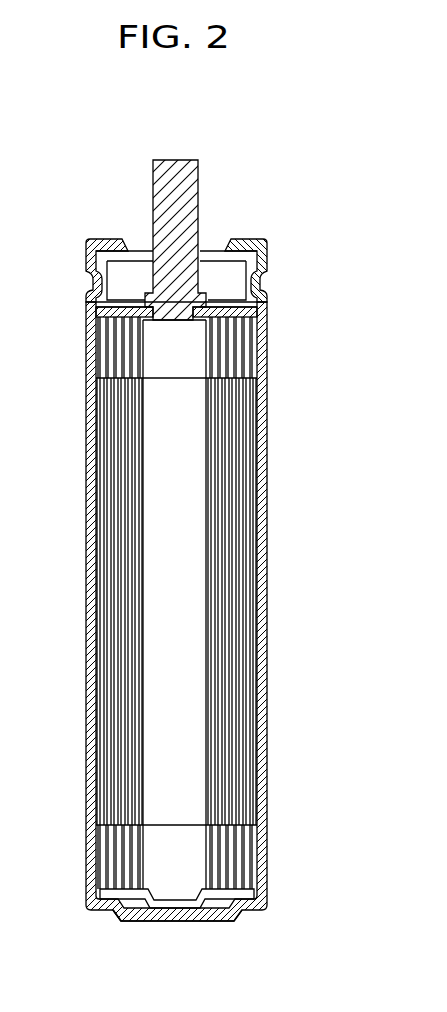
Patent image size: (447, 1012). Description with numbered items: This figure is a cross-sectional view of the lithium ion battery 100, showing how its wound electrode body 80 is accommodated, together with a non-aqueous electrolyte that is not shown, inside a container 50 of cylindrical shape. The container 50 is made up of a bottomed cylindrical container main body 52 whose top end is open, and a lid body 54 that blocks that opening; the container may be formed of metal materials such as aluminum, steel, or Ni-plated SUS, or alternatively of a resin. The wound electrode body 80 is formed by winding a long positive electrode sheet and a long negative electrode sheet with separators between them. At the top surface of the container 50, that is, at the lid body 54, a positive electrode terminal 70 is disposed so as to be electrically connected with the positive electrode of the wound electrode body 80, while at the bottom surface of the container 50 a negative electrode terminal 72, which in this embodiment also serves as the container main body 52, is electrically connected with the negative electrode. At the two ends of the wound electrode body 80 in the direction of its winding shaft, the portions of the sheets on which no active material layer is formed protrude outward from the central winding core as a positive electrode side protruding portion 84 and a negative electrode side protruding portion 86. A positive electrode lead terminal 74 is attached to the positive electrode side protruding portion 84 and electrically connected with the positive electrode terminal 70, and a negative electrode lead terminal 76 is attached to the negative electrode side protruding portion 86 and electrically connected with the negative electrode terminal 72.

The lithium ion battery 100 is at (301, 214).
The container 50 is at (86, 713).
The container main body 52 is at (264, 687).
The lid body 54 is at (140, 249).
The positive electrode terminal 70 is at (188, 159).
The negative electrode terminal 72 is at (222, 922).
The positive electrode lead terminal 74 is at (237, 312).
The negative electrode lead terminal 76 is at (118, 918).
The wound electrode body 80 is at (97, 845).
The positive electrode side protruding portion 84 is at (252, 338).
The negative electrode side protruding portion 86 is at (250, 858).